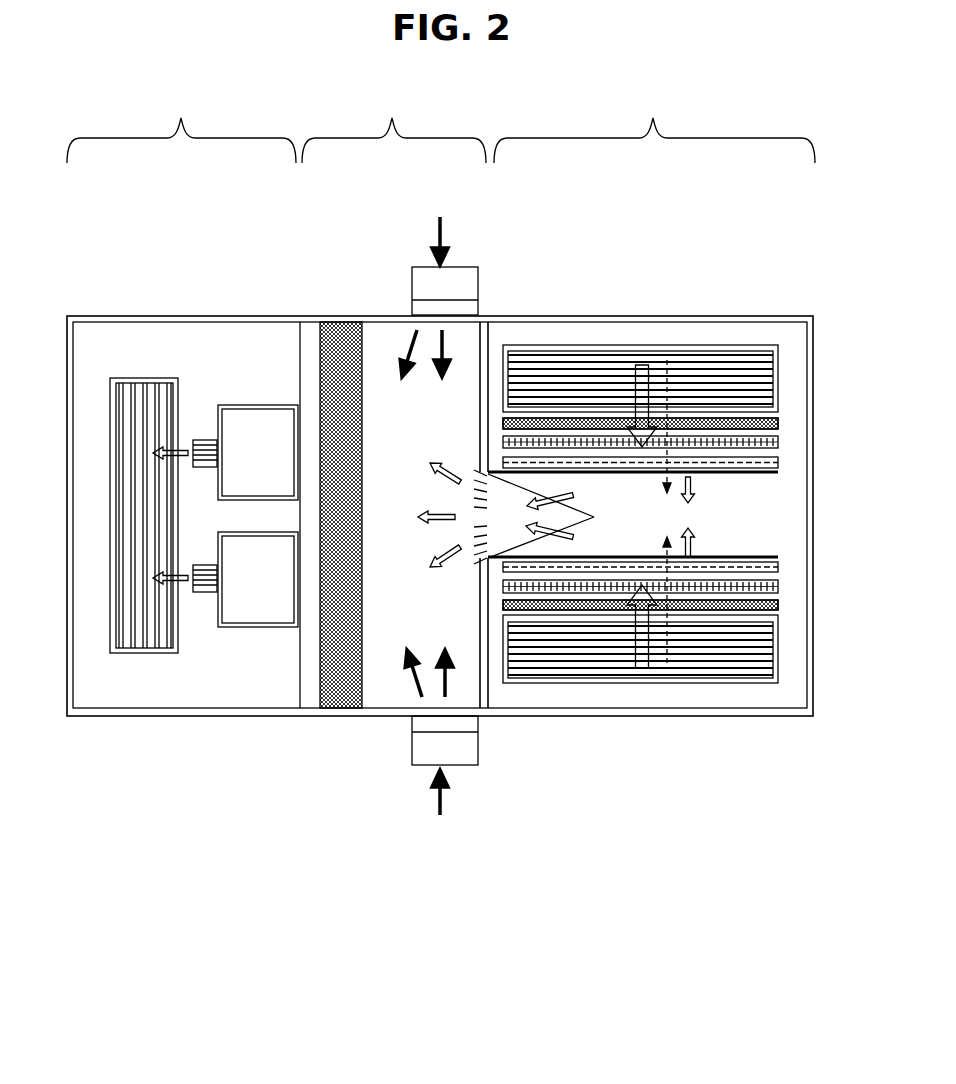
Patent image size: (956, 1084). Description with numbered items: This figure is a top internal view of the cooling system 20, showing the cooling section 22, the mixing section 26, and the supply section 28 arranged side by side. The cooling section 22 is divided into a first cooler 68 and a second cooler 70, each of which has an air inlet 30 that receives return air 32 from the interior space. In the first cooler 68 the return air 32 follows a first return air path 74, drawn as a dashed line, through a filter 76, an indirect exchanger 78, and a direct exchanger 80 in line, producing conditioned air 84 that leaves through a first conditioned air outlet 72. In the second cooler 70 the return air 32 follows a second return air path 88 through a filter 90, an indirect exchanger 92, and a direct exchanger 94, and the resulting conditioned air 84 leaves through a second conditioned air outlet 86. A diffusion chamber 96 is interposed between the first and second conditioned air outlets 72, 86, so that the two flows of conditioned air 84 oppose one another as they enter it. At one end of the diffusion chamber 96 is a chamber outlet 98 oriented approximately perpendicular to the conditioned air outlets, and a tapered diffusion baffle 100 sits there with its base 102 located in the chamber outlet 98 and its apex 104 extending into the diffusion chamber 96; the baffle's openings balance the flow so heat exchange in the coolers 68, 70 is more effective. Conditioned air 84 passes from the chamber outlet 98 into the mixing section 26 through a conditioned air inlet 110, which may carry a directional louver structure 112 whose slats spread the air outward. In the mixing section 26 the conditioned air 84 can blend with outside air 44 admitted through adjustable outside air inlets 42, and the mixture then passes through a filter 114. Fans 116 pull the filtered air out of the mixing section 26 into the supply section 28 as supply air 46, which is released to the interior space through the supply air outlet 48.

The cooling system 20 is at (452, 961).
The cooling section 22 is at (653, 118).
The mixing section 26 is at (392, 118).
The supply section 28 is at (181, 118).
The air inlet 30 is at (674, 378).
The return air 32 is at (637, 417).
The outside air inlets 42 is at (465, 277).
The outside air 44 is at (438, 230).
The supply air 46 is at (185, 452).
The supply air outlet 48 is at (133, 638).
The first cooler 68 is at (758, 700).
The second cooler 70 is at (762, 332).
The first conditioned air outlet 72 is at (718, 557).
The first return air path 74 is at (663, 645).
The filter 76 is at (545, 608).
The indirect exchanger 78 is at (530, 588).
The direct exchanger 80 is at (516, 563).
The conditioned air 84 is at (692, 478).
The second conditioned air outlet 86 is at (722, 472).
The second return air path 88 is at (667, 378).
The filter 90 is at (548, 440).
The indirect exchanger 92 is at (533, 425).
The direct exchanger 94 is at (515, 462).
The diffusion chamber 96 is at (767, 525).
The chamber outlet 98 is at (465, 545).
The diffusion baffle 100 is at (540, 492).
The base 102 is at (492, 476).
The apex 104 is at (594, 517).
The conditioned air inlet 110 is at (467, 510).
The directional louver structure 112 is at (467, 530).
The filter 114 is at (345, 328).
The fans 116 is at (282, 412).